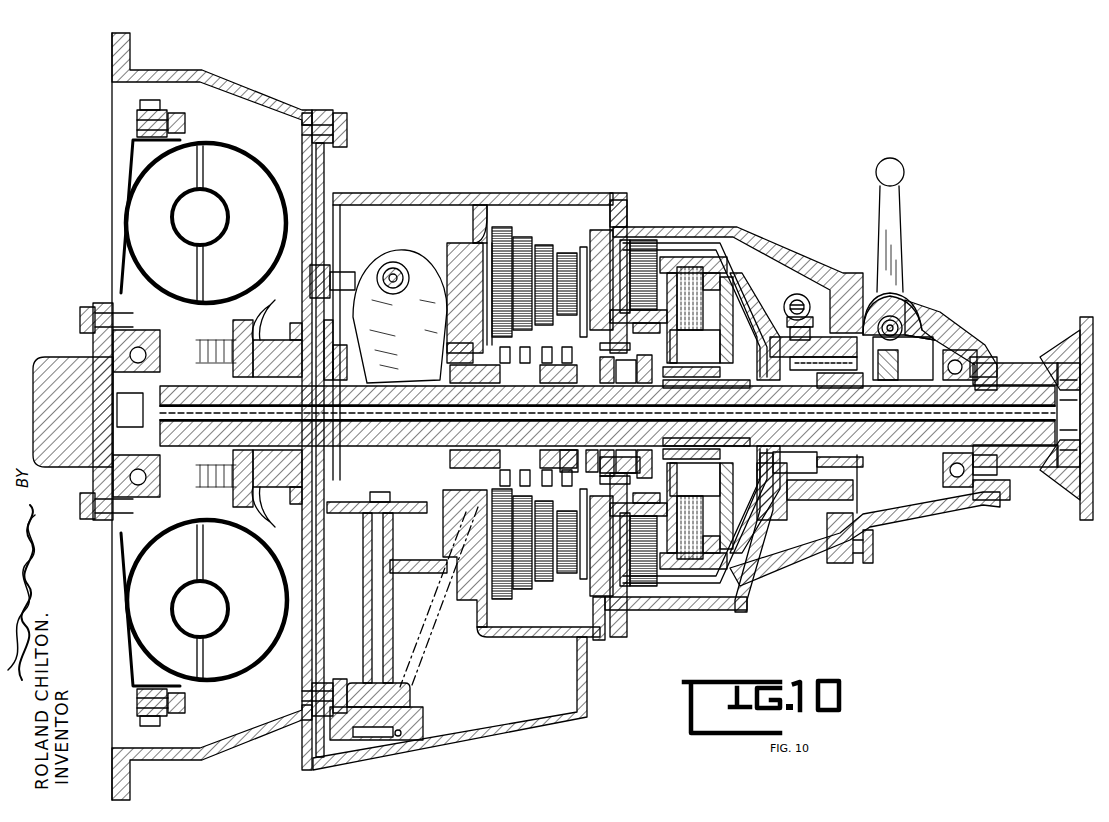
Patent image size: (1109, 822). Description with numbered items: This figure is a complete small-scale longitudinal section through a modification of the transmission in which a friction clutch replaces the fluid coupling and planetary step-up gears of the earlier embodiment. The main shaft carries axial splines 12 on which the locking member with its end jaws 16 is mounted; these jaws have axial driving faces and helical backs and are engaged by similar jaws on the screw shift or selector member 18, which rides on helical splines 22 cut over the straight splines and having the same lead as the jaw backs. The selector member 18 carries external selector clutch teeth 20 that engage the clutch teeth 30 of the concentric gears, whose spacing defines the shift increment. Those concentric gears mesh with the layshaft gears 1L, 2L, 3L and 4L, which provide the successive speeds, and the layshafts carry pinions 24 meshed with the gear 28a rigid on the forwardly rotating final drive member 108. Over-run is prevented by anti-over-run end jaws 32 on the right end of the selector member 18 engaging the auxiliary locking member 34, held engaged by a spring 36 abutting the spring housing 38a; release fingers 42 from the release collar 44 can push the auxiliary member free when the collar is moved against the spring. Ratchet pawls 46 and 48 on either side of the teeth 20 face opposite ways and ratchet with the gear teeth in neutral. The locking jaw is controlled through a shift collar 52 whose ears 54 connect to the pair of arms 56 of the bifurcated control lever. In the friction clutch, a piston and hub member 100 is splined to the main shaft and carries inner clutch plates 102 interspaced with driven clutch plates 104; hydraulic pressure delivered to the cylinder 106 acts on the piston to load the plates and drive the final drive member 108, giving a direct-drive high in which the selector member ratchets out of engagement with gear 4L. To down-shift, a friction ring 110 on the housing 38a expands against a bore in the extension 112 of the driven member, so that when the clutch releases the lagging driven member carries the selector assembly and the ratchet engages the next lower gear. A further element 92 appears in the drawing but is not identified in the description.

The layshaft gear 1L is at (500, 230).
The layshaft gear 2L is at (522, 240).
The layshaft gear 3L is at (545, 256).
The layshaft gear 4L is at (567, 255).
The axial splines 12 is at (400, 450).
The end jaws 16 is at (515, 377).
The screw shift or selector member 18 is at (558, 375).
The selector clutch teeth 20 is at (632, 470).
The helical splines 22 is at (565, 377).
The layshaft pinions 24 is at (641, 250).
The gear 28a is at (613, 337).
The clutch teeth 30 is at (482, 352).
The anti-over-run end jaws 32 is at (630, 358).
The auxiliary locking member 34 is at (629, 365).
The spring 36 is at (637, 355).
The spring housing 38a is at (627, 482).
The release fingers 42 is at (546, 354).
The release collar 44 is at (473, 480).
The ratchet pawls 46 is at (572, 448).
The ratchet pawls 48 is at (590, 450).
The shift collar 52 is at (448, 335).
The ears 54 is at (428, 448).
The control lever arms 56 is at (378, 352).
The output shaft sleeve 92 is at (672, 380).
The piston and hub member 100 is at (715, 362).
The inner clutch plates 102 is at (670, 340).
The driven clutch plates 104 is at (700, 262).
The cylinder 106 is at (722, 340).
The final drive member 108 is at (752, 292).
The friction ring 110 is at (660, 470).
The extension of the driven member 112 is at (666, 490).